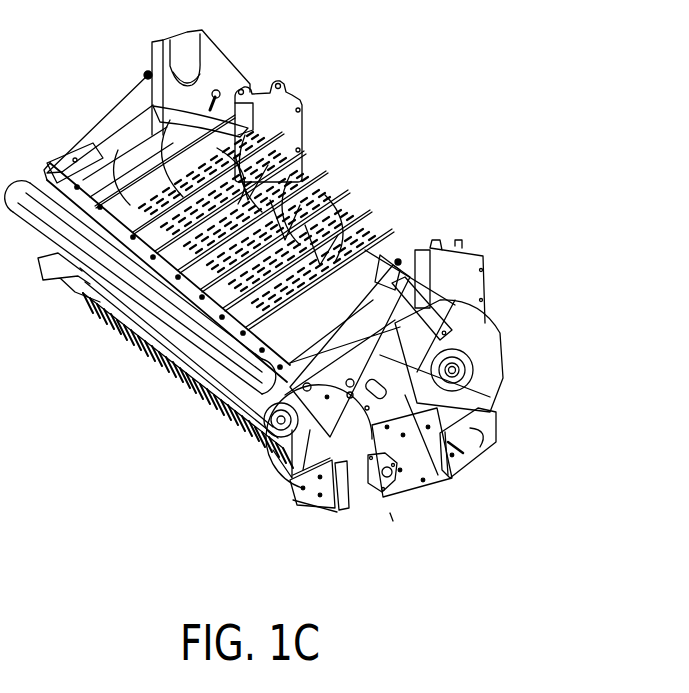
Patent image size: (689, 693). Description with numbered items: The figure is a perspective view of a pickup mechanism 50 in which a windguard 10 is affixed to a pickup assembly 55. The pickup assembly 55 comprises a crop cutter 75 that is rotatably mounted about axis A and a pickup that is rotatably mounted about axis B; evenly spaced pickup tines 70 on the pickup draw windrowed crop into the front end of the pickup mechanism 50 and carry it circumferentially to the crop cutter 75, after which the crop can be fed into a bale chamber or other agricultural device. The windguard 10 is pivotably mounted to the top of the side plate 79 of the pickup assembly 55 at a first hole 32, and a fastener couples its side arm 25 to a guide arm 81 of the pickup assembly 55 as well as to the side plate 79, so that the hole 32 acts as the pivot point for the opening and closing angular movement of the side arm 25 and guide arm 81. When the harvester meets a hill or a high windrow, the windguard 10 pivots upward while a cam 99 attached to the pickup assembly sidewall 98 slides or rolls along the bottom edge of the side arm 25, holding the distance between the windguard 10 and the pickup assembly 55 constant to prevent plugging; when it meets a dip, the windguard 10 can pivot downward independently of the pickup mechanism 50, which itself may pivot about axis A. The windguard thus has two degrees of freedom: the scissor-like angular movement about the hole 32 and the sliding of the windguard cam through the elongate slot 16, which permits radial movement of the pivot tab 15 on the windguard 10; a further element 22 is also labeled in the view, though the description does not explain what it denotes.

The pickup mechanism 50 is at (352, 63).
The hole of the windguard 32 is at (146, 72).
The pivot tab 15 is at (67, 153).
The windguard 10 is at (81, 298).
The pickup tines 70 is at (137, 350).
The crop cutter 75 is at (333, 183).
The linkage bracket 22 is at (395, 265).
The guide arm 81 is at (441, 313).
The side plate 79 is at (490, 381).
The axis A is at (472, 363).
The side arm 25 is at (463, 423).
The pickup assembly sidewall 98 is at (432, 446).
The pickup assembly 55 is at (410, 518).
The axis B is at (372, 500).
The cam 99 is at (280, 479).
The elongate slot 16 is at (263, 466).